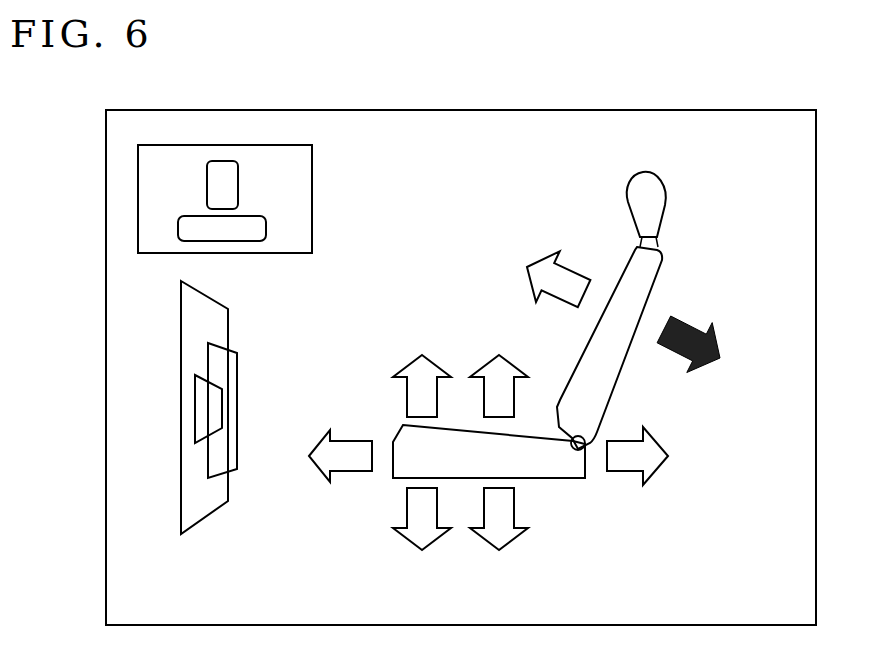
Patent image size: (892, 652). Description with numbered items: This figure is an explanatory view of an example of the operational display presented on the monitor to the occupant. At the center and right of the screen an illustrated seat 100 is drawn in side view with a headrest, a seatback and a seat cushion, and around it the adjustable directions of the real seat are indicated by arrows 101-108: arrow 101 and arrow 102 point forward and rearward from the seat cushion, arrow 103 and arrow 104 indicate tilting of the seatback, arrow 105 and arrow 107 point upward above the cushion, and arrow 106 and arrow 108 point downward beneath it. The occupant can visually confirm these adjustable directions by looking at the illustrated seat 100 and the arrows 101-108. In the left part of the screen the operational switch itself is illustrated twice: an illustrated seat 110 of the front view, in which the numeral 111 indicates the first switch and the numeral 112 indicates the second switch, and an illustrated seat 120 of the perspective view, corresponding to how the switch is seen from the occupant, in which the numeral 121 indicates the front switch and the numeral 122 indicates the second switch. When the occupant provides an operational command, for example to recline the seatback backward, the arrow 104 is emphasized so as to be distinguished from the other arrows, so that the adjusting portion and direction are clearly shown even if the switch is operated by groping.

The illustrated seat 100 is at (679, 190).
The arrow 101 is at (322, 447).
The arrow 102 is at (667, 457).
The arrow 103 is at (543, 252).
The arrow 104 is at (688, 320).
The arrow 105 is at (487, 367).
The arrow 106 is at (513, 505).
The arrow 107 is at (406, 397).
The arrow 108 is at (405, 517).
The illustrated seat of the front view 110 is at (138, 213).
The first switch 111 is at (261, 227).
The second switch 112 is at (220, 162).
The illustrated seat of the perspective view 120 is at (181, 381).
The front switch 121 is at (233, 473).
The second switch 122 is at (217, 390).